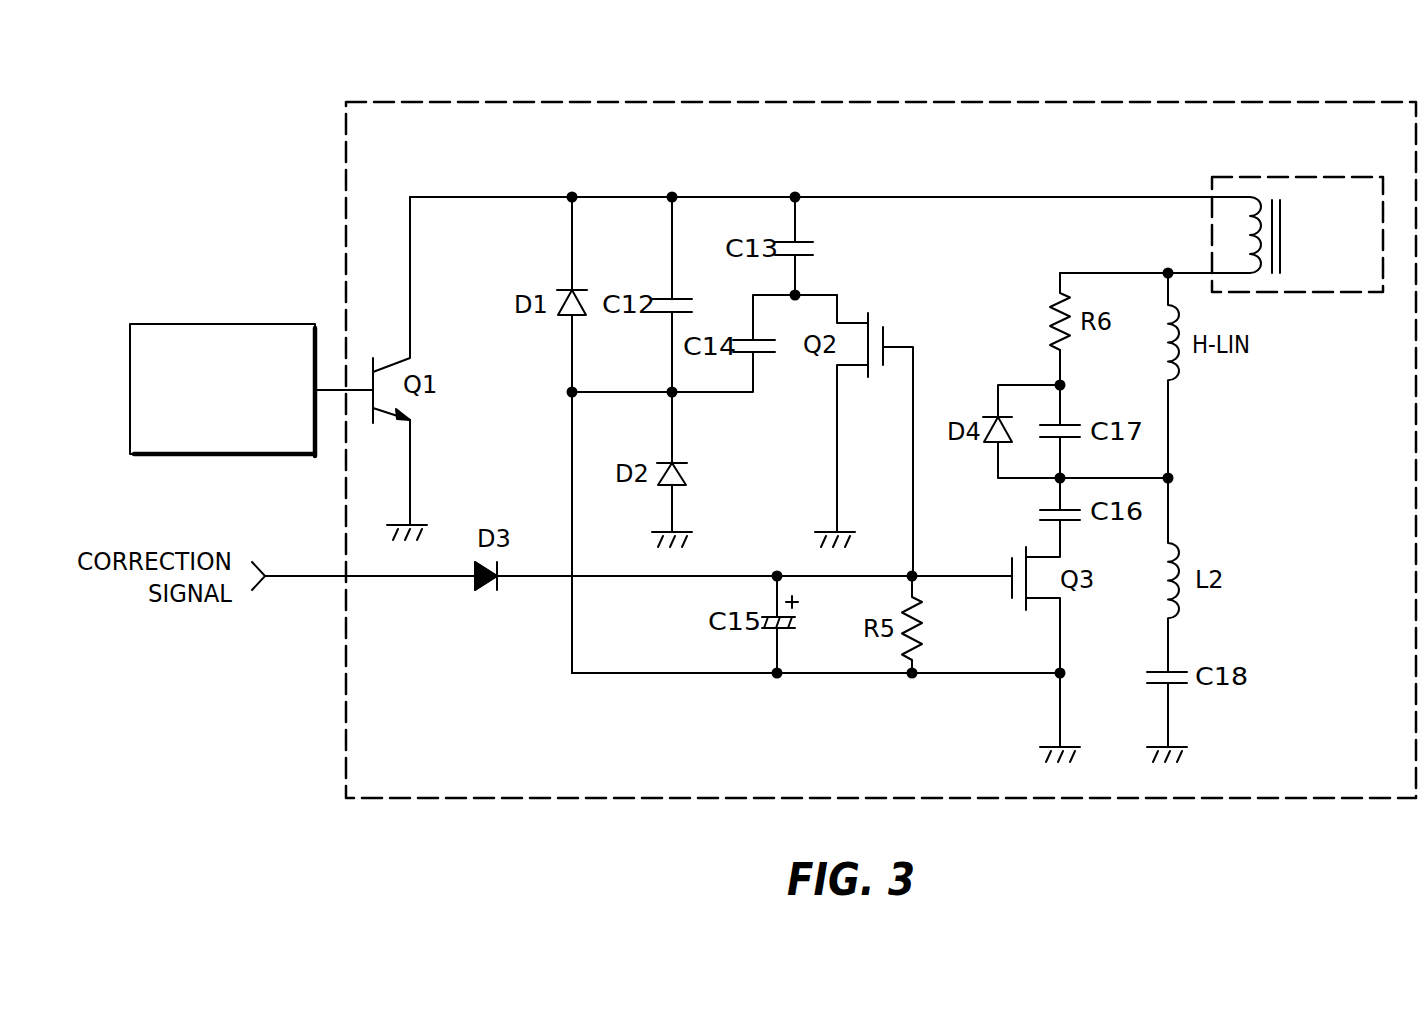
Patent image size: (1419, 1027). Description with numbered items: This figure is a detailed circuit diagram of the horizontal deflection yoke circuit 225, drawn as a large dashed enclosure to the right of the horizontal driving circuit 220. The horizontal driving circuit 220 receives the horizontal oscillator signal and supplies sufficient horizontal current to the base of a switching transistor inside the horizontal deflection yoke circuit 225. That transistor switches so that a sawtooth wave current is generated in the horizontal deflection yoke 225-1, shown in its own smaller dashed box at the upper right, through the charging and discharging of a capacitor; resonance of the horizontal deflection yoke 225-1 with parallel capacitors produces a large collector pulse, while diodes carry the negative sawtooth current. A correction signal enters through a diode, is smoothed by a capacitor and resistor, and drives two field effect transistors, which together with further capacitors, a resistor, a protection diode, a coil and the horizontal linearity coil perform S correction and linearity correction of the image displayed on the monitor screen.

The horizontal driving circuit 220 is at (185, 324).
The horizontal deflection yoke circuit 225 is at (983, 102).
The horizontal deflection yoke H-DY 225-1 is at (1265, 177).